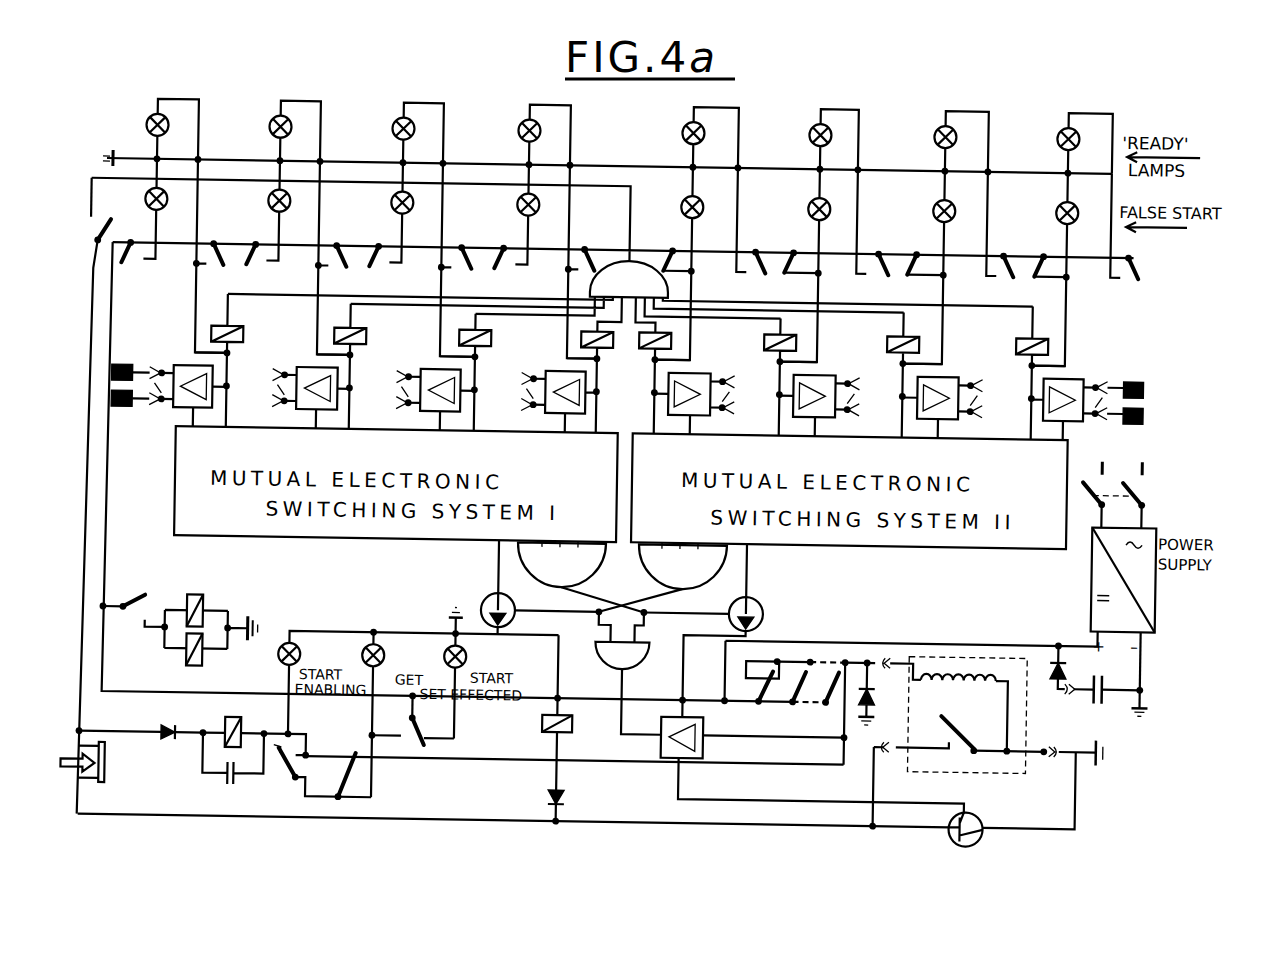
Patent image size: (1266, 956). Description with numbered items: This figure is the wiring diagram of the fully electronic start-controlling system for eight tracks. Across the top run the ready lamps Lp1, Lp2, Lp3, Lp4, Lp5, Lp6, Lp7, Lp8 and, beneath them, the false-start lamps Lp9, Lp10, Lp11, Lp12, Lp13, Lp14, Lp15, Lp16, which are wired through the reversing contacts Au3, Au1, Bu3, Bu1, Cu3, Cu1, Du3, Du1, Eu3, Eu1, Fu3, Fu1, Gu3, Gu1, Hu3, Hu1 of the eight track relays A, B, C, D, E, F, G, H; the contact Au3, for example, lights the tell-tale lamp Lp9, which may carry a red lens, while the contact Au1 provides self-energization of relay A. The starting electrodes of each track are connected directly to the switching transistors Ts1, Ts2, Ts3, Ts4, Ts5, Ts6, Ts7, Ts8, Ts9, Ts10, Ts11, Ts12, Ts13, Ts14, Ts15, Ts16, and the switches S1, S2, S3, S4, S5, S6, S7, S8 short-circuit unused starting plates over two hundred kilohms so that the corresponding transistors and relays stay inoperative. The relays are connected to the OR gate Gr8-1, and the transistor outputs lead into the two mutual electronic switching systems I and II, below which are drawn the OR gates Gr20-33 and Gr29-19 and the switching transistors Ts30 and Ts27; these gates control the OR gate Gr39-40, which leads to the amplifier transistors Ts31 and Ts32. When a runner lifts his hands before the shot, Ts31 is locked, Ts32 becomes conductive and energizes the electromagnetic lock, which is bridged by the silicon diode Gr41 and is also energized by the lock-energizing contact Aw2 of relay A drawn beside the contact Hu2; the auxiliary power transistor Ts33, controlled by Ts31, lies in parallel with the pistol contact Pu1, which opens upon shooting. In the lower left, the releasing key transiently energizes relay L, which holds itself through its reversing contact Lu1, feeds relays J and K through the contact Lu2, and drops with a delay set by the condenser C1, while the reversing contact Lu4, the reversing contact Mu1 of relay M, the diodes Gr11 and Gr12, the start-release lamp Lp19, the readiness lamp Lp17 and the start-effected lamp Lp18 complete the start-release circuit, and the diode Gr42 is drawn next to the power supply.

The ready lamp Lp1 is at (1067, 157).
The ready lamp Lp2 is at (945, 155).
The ready lamp Lp3 is at (818, 153).
The ready lamp Lp4 is at (694, 152).
The ready lamp Lp5 is at (528, 149).
The ready lamp Lp6 is at (403, 147).
The ready lamp Lp7 is at (280, 145).
The ready lamp Lp8 is at (157, 143).
The false start lamp Lp9 is at (1049, 283).
The false start lamp Lp10 is at (925, 281).
The false start lamp Lp11 is at (800, 279).
The false start lamp Lp12 is at (673, 277).
The false start lamp Lp13 is at (509, 229).
The false start lamp Lp14 is at (383, 227).
The false start lamp Lp15 is at (260, 225).
The false start lamp Lp16 is at (137, 223).
The get set lamp Lp17 is at (389, 713).
The start effected lamp Lp18 is at (472, 673).
The start enabling lamp Lp19 is at (418, 686).
The relay contact Hu3 is at (132, 259).
The relay contact Hu1 is at (211, 256).
The relay contact Gu3 is at (258, 261).
The relay contact Gu1 is at (333, 258).
The relay contact Fu3 is at (379, 263).
The relay contact Fu1 is at (457, 260).
The relay contact Eu3 is at (503, 265).
The relay contact Eu1 is at (582, 262).
The relay contact Du3 is at (676, 267).
The relay contact Du1 is at (750, 228).
The relay contact Cu3 is at (799, 269).
The relay contact Cu1 is at (874, 231).
The relay contact Bu3 is at (923, 271).
The relay contact Bu1 is at (1001, 232).
The relay contact Au3 is at (1048, 273).
The relay contact Au1 is at (1126, 234).
The relay contact Lu4 is at (85, 495).
The relay contact Lu2 is at (132, 614).
The relay contact Lu1 is at (322, 766).
The relay contact Mu1 is at (395, 746).
The relay contact Hu2 is at (809, 685).
The relay contact Aw2 is at (810, 682).
The relay coil A is at (1027, 373).
The relay coil B is at (904, 375).
The relay coil C is at (779, 377).
The relay coil D is at (659, 383).
The relay coil E is at (597, 382).
The relay coil F is at (476, 372).
The relay coil G is at (353, 366).
The relay coil H is at (229, 360).
The relay coil J is at (207, 607).
The relay coil K is at (206, 652).
The relay coil L is at (243, 726).
The relay coil M is at (545, 728).
The starting block sensor S1 is at (1087, 410).
The starting block sensor S2 is at (942, 408).
The starting block sensor S3 is at (819, 406).
The starting block sensor S4 is at (696, 404).
The starting block sensor S5 is at (559, 402).
The starting block sensor S6 is at (433, 399).
The starting block sensor S7 is at (307, 398).
The starting block sensor S8 is at (169, 395).
The transistor Ts1 is at (1068, 390).
The transistor Ts2 is at (1068, 412).
The transistor Ts3 is at (942, 388).
The transistor Ts4 is at (942, 410).
The transistor Ts5 is at (818, 386).
The transistor Ts6 is at (818, 408).
The transistor Ts7 is at (693, 384).
The transistor Ts8 is at (693, 406).
The transistor Ts9 is at (555, 382).
The transistor Ts10 is at (559, 404).
The transistor Ts11 is at (434, 380).
The transistor Ts12 is at (434, 402).
The transistor Ts13 is at (310, 378).
The transistor Ts14 is at (310, 400).
The transistor Ts15 is at (187, 376).
The transistor Ts16 is at (187, 398).
The transistor Ts27 is at (708, 630).
The transistor Ts30 is at (536, 588).
The transistor Ts31 is at (812, 765).
The transistor Ts32 is at (677, 750).
The transistor Ts33 is at (981, 829).
The rectifier group Gr8...1 Gr8-1 is at (630, 297).
The rectifier group Gr20,31,30,33 Gr20-33 is at (581, 577).
The rectifier group Gr29,27,24,19 Gr29-19 is at (663, 578).
The rectifier group Gr39,40 Gr39-40 is at (628, 673).
The diode Gr11 is at (164, 741).
The diode Gr12 is at (575, 799).
The diode Gr41 is at (883, 692).
The diode Gr42 is at (1097, 675).
The capacitor C1 is at (233, 765).
The pistol lock switch Pu1 is at (989, 743).